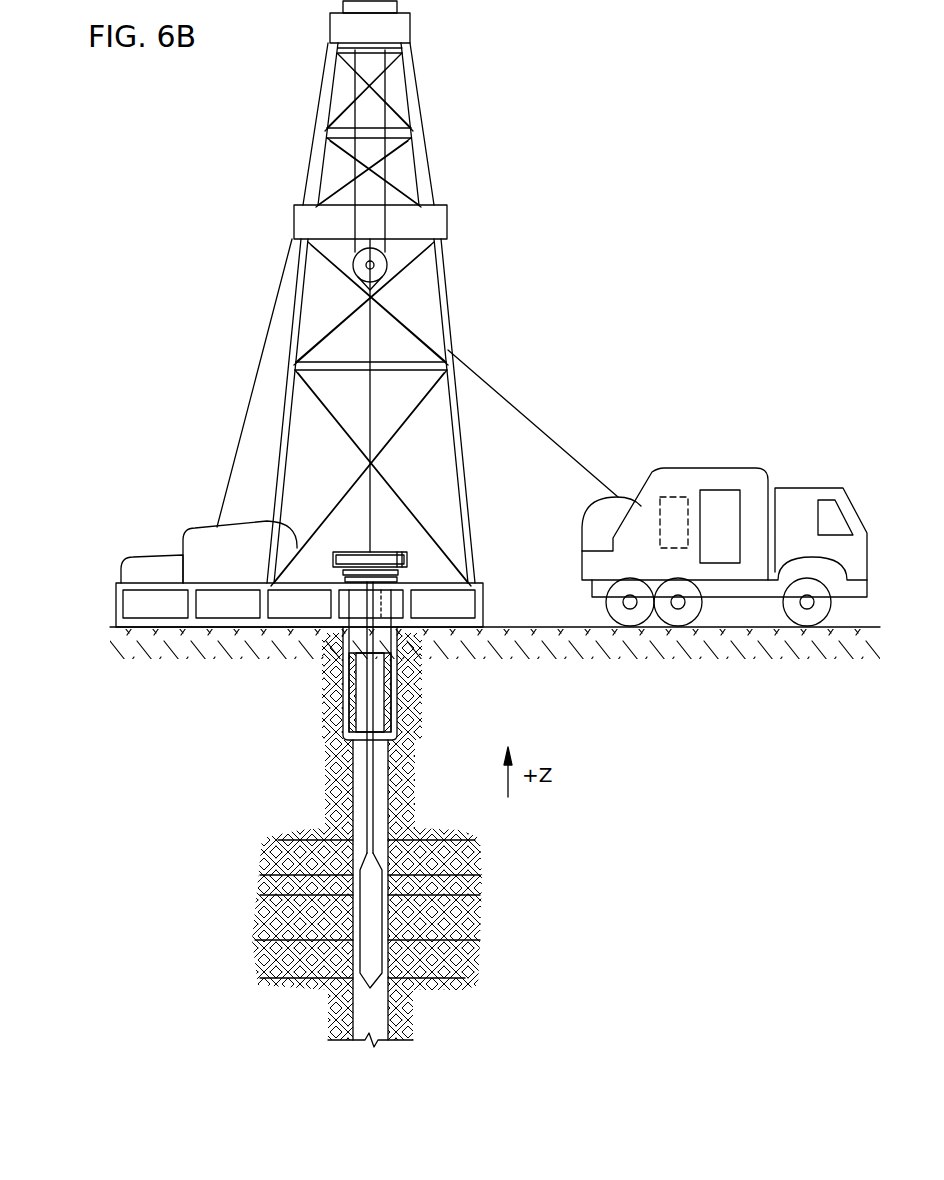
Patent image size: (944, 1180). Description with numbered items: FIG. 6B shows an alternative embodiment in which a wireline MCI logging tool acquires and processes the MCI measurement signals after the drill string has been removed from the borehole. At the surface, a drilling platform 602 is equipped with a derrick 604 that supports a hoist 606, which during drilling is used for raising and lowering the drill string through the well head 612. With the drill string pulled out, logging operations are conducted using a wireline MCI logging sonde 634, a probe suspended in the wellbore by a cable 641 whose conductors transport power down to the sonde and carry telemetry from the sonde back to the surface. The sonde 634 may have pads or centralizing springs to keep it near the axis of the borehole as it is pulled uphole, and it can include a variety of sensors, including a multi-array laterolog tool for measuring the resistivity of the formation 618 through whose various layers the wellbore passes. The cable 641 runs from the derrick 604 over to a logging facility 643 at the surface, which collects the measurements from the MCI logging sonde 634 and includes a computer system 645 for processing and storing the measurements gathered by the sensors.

The drilling platform 602 is at (116, 607).
The derrick 604 is at (425, 168).
The hoist 606 is at (378, 265).
The well head 612 is at (390, 548).
The formation 618 is at (503, 840).
The wireline MCI logging sonde 634 is at (360, 909).
The cable 641 is at (488, 378).
The logging facility 643 is at (740, 468).
The computer system 645 is at (668, 497).